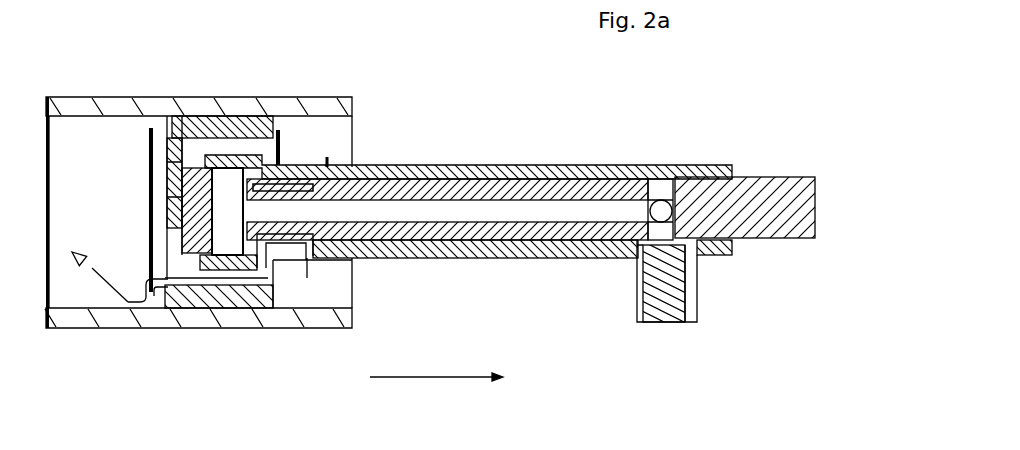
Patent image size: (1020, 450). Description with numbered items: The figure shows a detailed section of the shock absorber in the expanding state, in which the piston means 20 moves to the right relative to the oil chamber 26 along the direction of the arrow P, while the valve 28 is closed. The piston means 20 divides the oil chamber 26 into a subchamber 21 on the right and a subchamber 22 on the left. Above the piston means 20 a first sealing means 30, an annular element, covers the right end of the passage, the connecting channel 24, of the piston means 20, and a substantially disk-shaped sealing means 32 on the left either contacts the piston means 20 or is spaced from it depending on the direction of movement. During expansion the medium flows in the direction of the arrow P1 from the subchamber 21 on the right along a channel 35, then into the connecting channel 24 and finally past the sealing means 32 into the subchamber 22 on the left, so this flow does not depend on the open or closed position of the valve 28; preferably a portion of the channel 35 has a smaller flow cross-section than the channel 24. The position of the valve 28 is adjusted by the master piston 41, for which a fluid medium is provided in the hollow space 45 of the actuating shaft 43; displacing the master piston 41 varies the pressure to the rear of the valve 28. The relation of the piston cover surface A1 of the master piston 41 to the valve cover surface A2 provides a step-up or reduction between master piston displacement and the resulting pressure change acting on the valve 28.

The piston means 20 is at (230, 309).
The subchamber on the right 21 is at (352, 97).
The subchamber on the left 22 is at (90, 137).
The connecting channel 24 is at (250, 142).
The oil chamber 26 is at (120, 316).
The valve 28 is at (193, 222).
The first sealing means 30 is at (285, 180).
The sealing means on the left 32 is at (168, 158).
The channel 35 is at (285, 184).
The master piston 41 is at (650, 300).
The actuating shaft 43 is at (582, 252).
The hollow space 45 is at (543, 213).
The piston cover surface A1 is at (640, 250).
The valve cover surface A2 is at (210, 243).
The direction of piston movement P is at (436, 366).
The direction of flow of the medium P1 is at (110, 262).